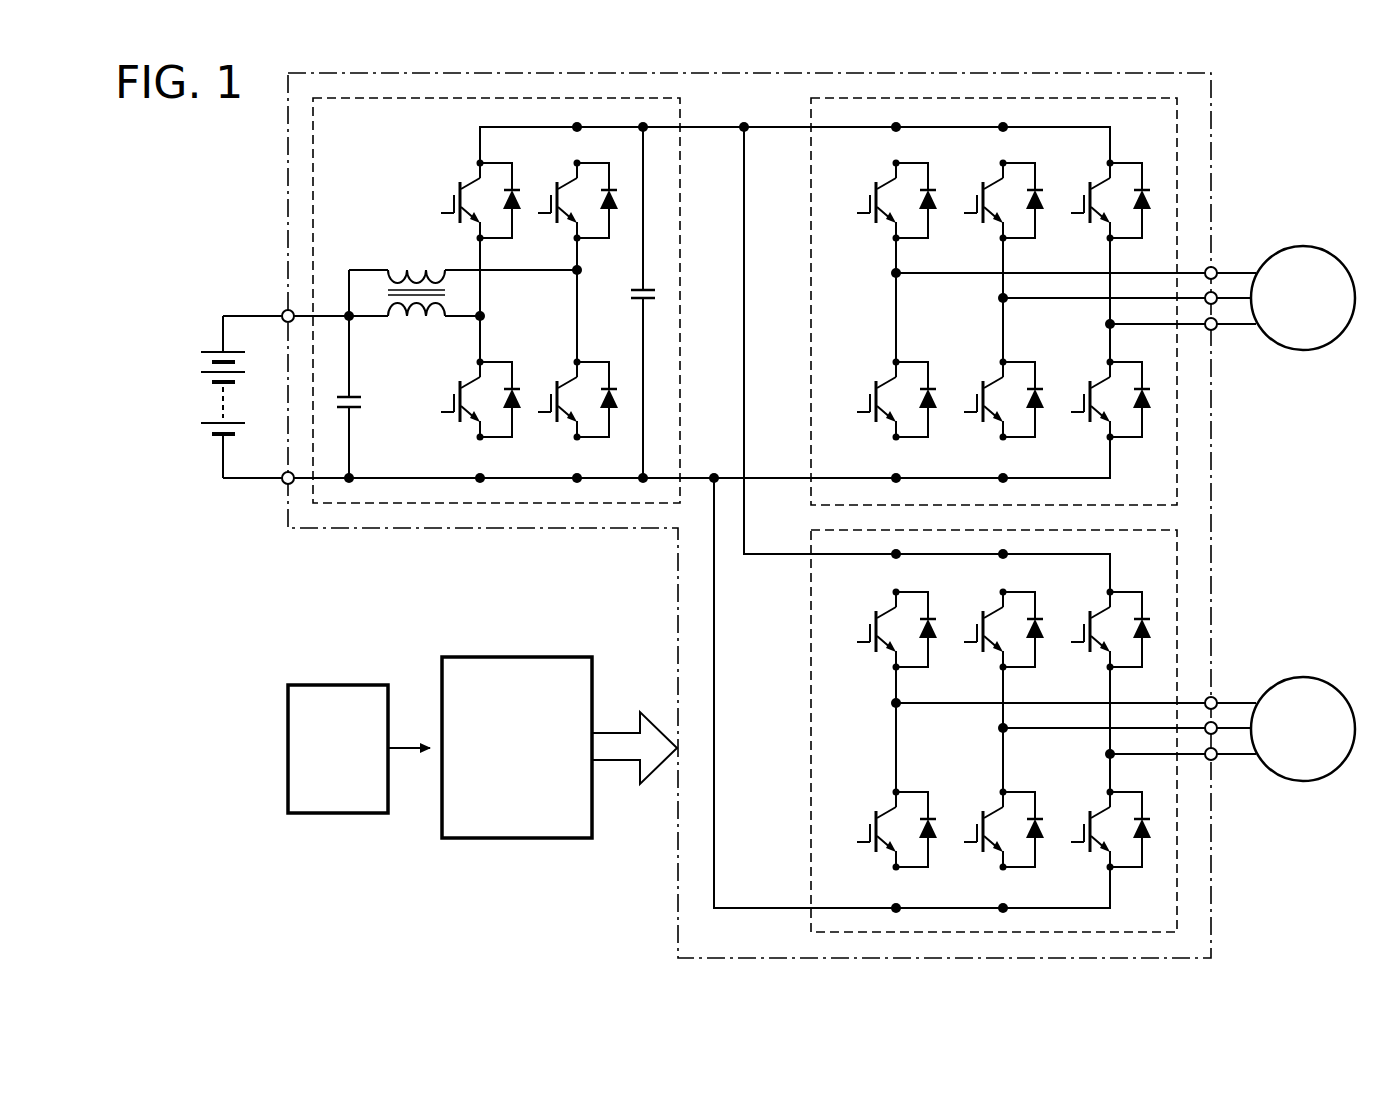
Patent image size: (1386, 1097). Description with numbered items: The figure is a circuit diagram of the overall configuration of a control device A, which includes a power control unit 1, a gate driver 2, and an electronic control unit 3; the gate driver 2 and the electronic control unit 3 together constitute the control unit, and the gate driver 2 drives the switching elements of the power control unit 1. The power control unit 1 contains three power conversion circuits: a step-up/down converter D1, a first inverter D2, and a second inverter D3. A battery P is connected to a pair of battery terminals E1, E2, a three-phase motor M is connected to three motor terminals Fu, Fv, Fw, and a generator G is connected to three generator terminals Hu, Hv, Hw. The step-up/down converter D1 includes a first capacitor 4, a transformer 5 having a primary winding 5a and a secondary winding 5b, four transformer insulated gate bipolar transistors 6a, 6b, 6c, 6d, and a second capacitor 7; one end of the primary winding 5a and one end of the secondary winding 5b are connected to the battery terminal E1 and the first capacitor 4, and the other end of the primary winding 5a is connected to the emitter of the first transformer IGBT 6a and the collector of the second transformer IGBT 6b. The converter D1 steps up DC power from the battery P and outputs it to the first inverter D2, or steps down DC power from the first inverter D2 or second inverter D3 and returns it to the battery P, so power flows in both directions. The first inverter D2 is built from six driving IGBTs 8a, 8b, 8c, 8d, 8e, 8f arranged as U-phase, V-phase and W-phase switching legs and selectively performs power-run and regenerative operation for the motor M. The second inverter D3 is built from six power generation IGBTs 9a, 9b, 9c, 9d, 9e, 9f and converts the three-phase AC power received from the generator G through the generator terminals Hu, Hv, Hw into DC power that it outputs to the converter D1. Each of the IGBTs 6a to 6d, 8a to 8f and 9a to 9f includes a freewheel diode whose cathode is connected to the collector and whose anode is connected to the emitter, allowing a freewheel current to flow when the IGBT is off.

The power control unit 1 is at (1212, 527).
The gate driver 2 is at (515, 657).
The electronic control unit 3 is at (338, 685).
The first capacitor 4 is at (362, 398).
The transformer 5 is at (390, 281).
The primary winding 5a is at (420, 306).
The secondary winding 5b is at (415, 276).
The first transformer IGBT 6a is at (458, 200).
The second transformer IGBT 6b is at (458, 399).
The transformer IGBT 6c is at (555, 200).
The transformer IGBT 6d is at (555, 399).
The second capacitor 7 is at (640, 294).
The driving IGBT 8a is at (874, 200).
The driving IGBT 8b is at (874, 399).
The driving IGBT 8c is at (981, 200).
The driving IGBT 8d is at (981, 399).
The driving IGBT 8e is at (1088, 200).
The driving IGBT 8f is at (1088, 399).
The power generation IGBT 9a is at (874, 630).
The power generation IGBT 9b is at (874, 830).
The power generation IGBT 9c is at (981, 630).
The power generation IGBT 9d is at (981, 830).
The power generation IGBT 9e is at (1088, 630).
The power generation IGBT 9f is at (1088, 830).
The control device A is at (482, 749).
The step-up/down converter D1 is at (680, 297).
The first inverter D2 is at (811, 308).
The second inverter D3 is at (811, 745).
The battery terminal E1 is at (287, 310).
The battery terminal E2 is at (287, 484).
The motor terminal Fu is at (1215, 268).
The motor terminal Fv is at (1216, 304).
The motor terminal Fw is at (1213, 330).
The generator G is at (1303, 677).
The generator terminal Hu is at (1215, 698).
The generator terminal Hv is at (1216, 734).
The generator terminal Hw is at (1213, 760).
The three-phase motor M is at (1304, 246).
The battery P is at (210, 344).